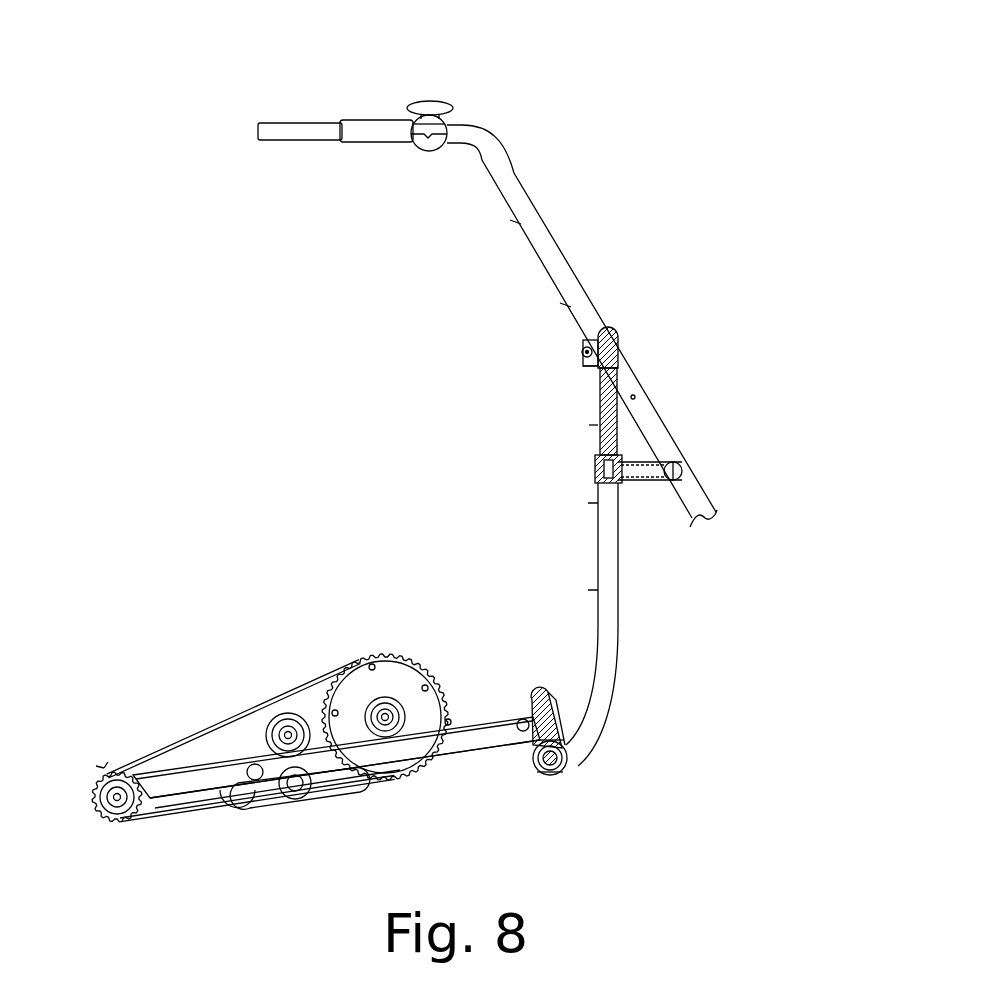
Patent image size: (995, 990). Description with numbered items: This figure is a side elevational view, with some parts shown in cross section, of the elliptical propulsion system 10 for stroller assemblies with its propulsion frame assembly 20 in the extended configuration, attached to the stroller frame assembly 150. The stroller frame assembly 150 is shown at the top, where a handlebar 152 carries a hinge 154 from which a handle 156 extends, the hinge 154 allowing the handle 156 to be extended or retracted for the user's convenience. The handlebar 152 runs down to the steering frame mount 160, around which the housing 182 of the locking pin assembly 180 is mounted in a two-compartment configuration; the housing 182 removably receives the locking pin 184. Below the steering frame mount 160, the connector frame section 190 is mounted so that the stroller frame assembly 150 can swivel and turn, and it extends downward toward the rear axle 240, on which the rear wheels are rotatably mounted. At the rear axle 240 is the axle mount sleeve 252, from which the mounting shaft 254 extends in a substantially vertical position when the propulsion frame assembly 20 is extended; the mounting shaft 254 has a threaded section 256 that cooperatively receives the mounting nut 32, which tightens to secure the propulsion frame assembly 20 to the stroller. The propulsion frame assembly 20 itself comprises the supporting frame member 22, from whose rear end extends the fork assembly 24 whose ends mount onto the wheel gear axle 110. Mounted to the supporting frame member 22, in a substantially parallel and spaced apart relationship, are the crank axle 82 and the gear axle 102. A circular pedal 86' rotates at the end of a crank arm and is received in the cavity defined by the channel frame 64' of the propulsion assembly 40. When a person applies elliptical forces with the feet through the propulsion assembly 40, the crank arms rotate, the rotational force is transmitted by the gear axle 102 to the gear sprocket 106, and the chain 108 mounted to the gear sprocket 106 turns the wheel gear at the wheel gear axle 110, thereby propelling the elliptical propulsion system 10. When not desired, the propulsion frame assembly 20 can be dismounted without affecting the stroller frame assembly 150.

The elliptical propulsion system 10 is at (226, 540).
The propulsion frame assembly 20 is at (550, 676).
The supporting frame member 22 is at (498, 741).
The fork assembly 24 is at (167, 788).
The mounting nut 32 is at (538, 697).
The propulsion assembly 40 is at (423, 631).
The channel frame 64' is at (300, 808).
The crank axle 82 is at (286, 712).
The circular pedal 86' is at (233, 820).
The gear axle 102 is at (393, 697).
The gear sprocket 106 is at (386, 667).
The chain 108 is at (167, 741).
The wheel gear axle 110 is at (101, 808).
The stroller frame assembly 150 is at (506, 123).
The handlebar 152 is at (517, 178).
The hinge 154 is at (416, 148).
The handle 156 is at (350, 120).
The steering frame mount 160 is at (578, 397).
The locking pin assembly 180 is at (535, 348).
The housing 182 is at (582, 350).
The locking pin 184 is at (583, 354).
The connector frame section 190 is at (607, 540).
The axle 240 is at (534, 774).
The axle mount sleeve 252 is at (566, 775).
The mounting shaft 254 is at (555, 713).
The threaded section 256 is at (550, 705).